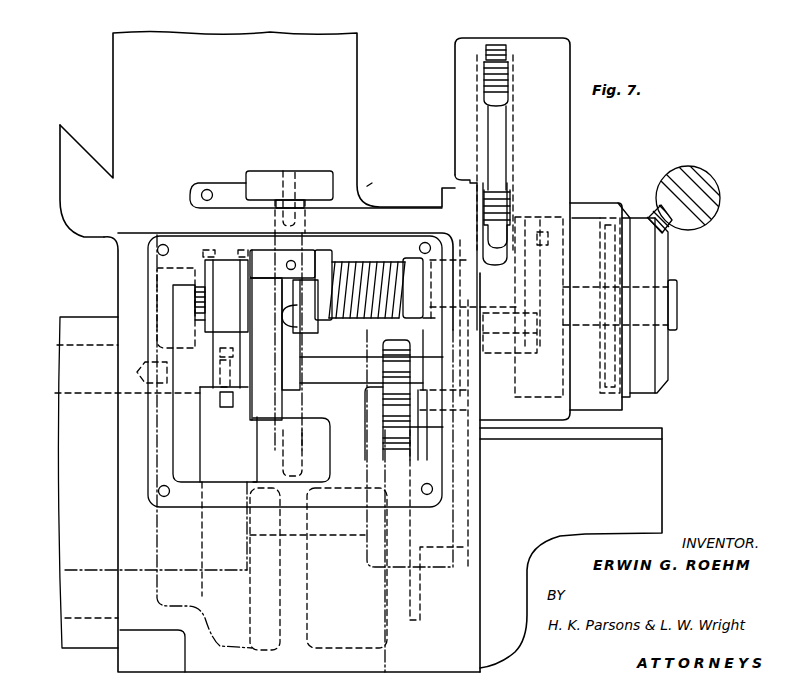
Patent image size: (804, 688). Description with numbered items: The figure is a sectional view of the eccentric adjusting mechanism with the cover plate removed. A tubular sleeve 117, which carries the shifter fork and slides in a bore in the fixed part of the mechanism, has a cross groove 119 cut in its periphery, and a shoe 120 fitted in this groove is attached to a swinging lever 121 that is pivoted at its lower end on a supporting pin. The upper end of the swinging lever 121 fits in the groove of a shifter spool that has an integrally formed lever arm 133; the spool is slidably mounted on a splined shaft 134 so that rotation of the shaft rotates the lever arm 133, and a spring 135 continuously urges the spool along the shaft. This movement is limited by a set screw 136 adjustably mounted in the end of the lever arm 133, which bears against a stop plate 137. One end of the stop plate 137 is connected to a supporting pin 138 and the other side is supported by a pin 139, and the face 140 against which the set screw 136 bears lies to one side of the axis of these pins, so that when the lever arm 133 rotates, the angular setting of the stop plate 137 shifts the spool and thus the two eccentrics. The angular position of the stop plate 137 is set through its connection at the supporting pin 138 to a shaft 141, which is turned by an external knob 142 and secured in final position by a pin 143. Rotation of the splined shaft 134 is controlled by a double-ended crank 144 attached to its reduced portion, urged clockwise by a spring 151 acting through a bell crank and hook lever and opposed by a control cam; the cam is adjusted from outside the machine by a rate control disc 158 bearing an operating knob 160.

The tubular sleeve 117 is at (83, 393).
The cross groove 119 is at (228, 408).
The shoe 120 is at (220, 397).
The swinging lever 121 is at (215, 338).
The lever arm 133 is at (310, 332).
The splined shaft 134 is at (365, 263).
The spring 135 is at (402, 258).
The set screw 136 is at (330, 318).
The stop plate 137 is at (267, 262).
The supporting pin 138 is at (310, 260).
The pin 139 is at (302, 445).
The face 140 is at (283, 372).
The shaft 141 is at (305, 228).
The external knob 142 is at (318, 170).
The pin 143 is at (290, 172).
The double-ended crank 144 is at (520, 345).
The spring 151 is at (505, 200).
The rate control disc 158 is at (670, 268).
The operating knob 160 is at (707, 180).